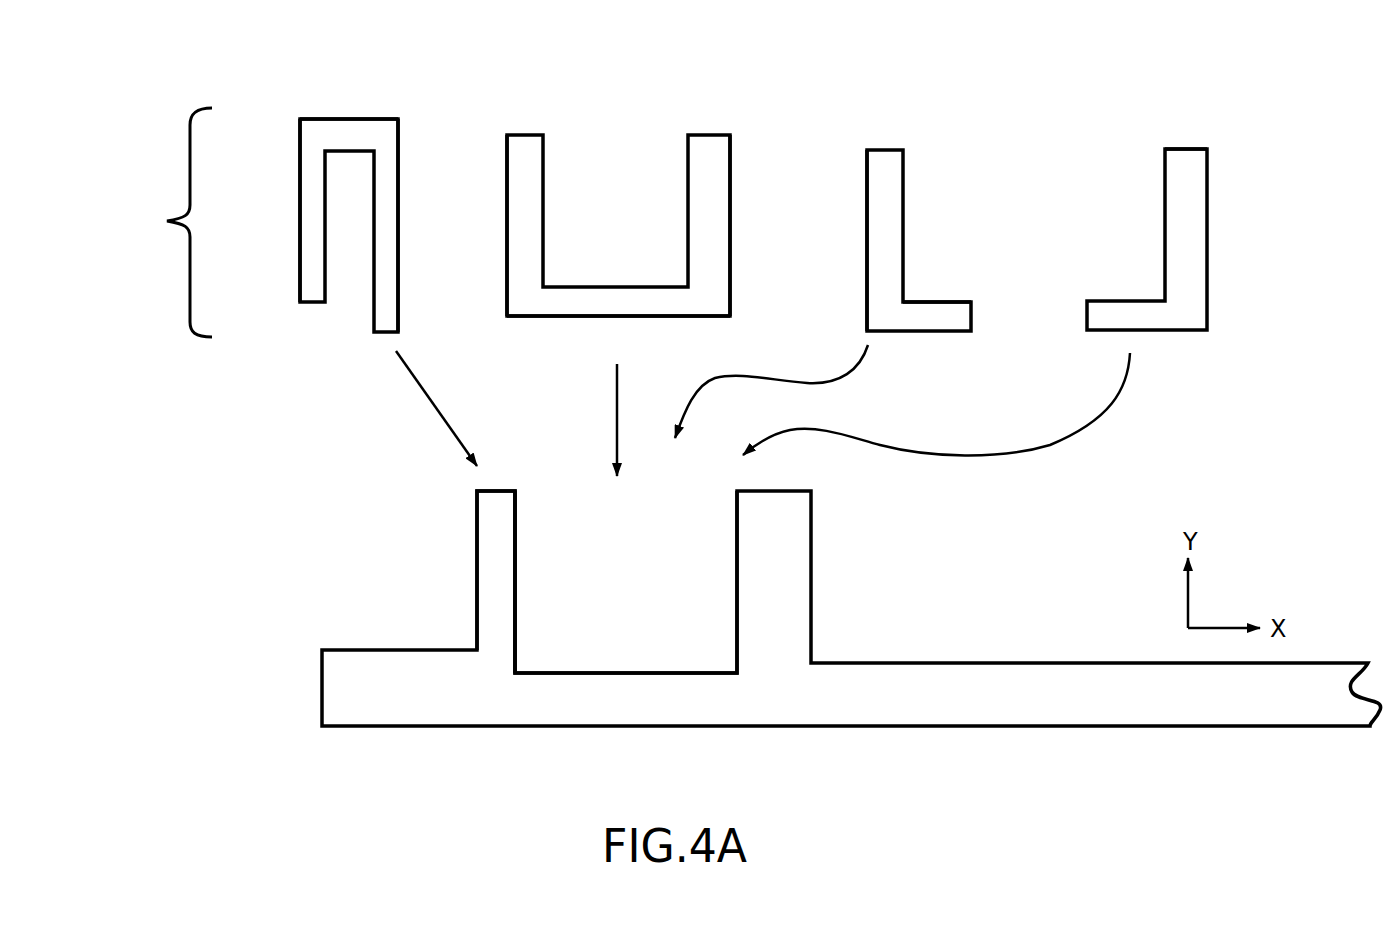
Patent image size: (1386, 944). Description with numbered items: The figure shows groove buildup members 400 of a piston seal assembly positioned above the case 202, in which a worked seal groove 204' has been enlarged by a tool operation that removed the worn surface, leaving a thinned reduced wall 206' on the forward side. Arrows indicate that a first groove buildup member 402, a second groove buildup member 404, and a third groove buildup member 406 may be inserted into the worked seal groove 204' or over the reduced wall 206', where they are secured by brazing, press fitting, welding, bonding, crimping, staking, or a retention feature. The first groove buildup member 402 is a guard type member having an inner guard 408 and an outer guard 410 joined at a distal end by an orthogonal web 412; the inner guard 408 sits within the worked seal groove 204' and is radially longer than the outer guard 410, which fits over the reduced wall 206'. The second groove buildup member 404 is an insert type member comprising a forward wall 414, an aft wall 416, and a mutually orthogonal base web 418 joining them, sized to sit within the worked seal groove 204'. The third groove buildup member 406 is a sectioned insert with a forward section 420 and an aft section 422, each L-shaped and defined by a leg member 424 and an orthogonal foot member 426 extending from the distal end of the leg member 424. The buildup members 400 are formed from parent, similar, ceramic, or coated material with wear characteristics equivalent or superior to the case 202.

The groove buildup member 400 is at (165, 222).
The first groove buildup member 402 is at (403, 92).
The second groove buildup member 404 is at (723, 108).
The third groove buildup member 406 is at (1227, 143).
The inner guard 408 is at (382, 303).
The outer guard 410 is at (305, 239).
The orthogonal web 412 is at (350, 127).
The forward wall 414 is at (537, 158).
The aft wall 416 is at (698, 182).
The base web 418 is at (635, 293).
The forward section 420 is at (888, 155).
The aft section 422 is at (1183, 162).
The leg member 424 is at (878, 215).
The foot member 426 is at (933, 310).
The case 202 is at (1112, 705).
The worked seal groove 204' is at (626, 578).
The reduced wall 206' is at (469, 582).